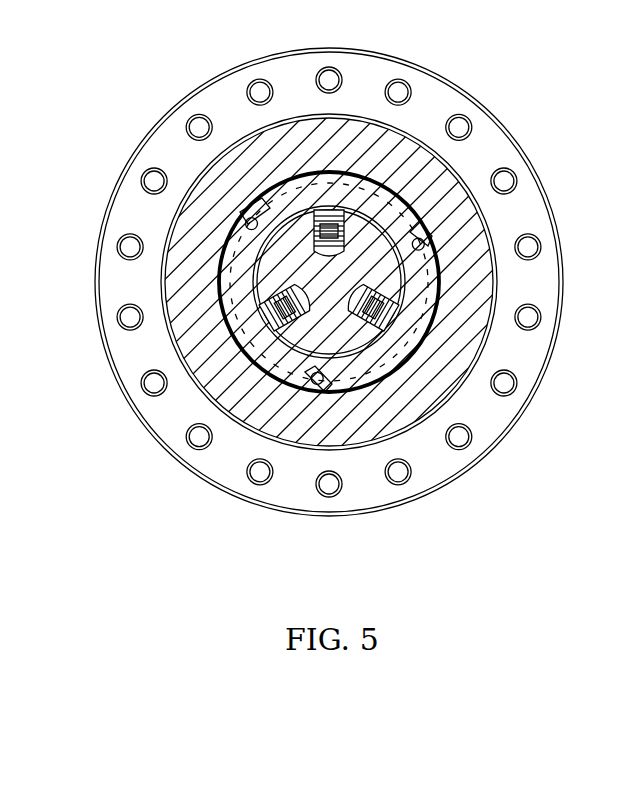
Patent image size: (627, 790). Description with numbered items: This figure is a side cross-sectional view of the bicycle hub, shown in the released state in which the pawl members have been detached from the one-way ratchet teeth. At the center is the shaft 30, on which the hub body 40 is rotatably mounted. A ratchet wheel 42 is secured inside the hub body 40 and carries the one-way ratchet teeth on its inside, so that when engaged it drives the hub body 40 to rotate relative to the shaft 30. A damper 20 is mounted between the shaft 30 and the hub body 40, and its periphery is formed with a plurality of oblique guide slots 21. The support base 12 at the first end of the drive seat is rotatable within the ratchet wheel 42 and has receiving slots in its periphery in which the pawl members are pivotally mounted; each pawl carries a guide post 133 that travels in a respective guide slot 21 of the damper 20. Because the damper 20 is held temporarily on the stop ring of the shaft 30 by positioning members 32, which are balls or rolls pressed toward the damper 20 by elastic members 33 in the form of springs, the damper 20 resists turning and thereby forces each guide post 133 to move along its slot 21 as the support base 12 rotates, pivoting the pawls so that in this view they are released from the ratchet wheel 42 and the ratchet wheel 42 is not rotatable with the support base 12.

The support base 12 is at (228, 252).
The damper 20 is at (403, 374).
The oblique guide slots 21 is at (240, 205).
The shaft 30 is at (367, 179).
The positioning members 32 is at (273, 313).
The elastic members 33 is at (398, 288).
The hub body 40 is at (167, 410).
The ratchet wheel 42 is at (440, 188).
The guide post 133 is at (244, 244).